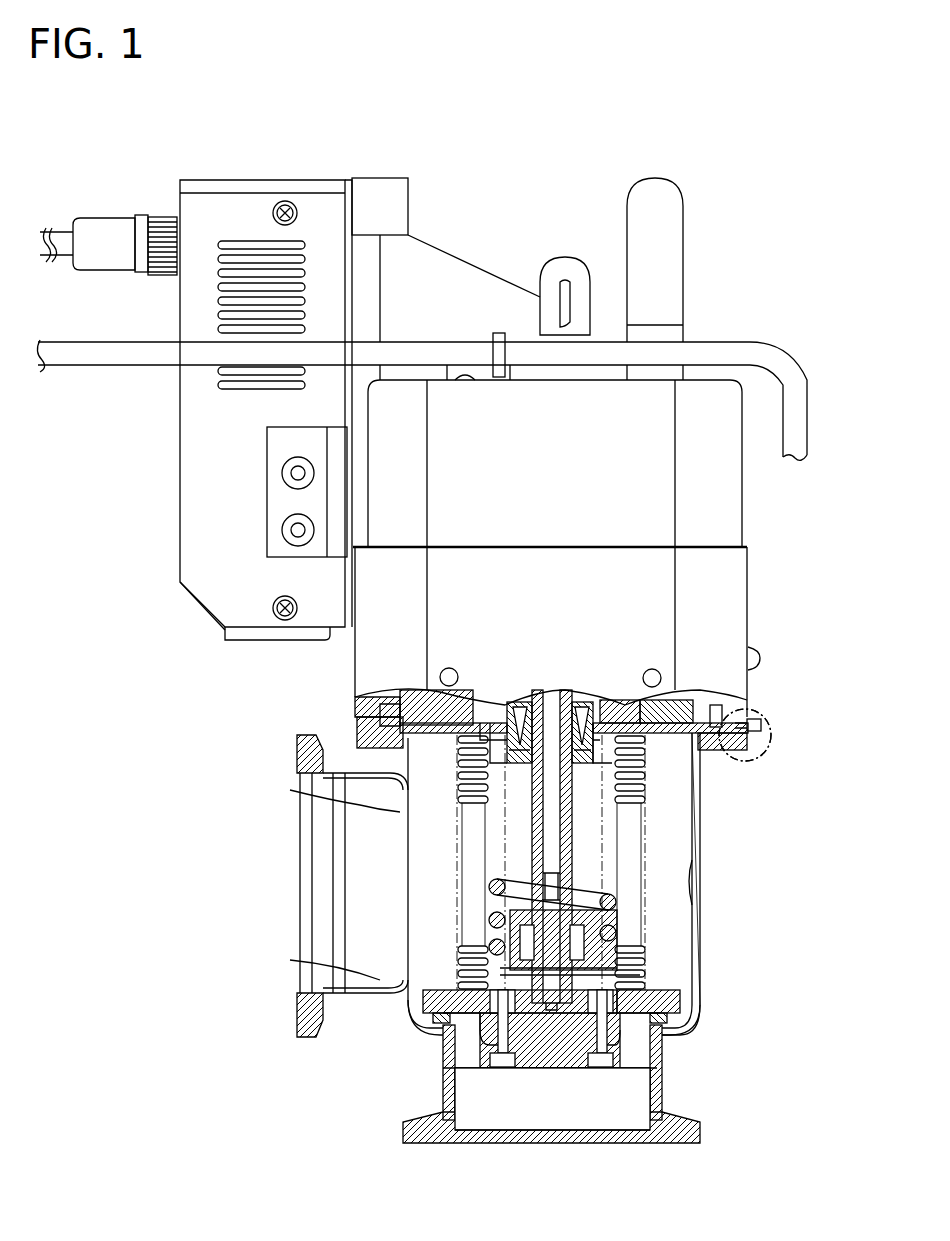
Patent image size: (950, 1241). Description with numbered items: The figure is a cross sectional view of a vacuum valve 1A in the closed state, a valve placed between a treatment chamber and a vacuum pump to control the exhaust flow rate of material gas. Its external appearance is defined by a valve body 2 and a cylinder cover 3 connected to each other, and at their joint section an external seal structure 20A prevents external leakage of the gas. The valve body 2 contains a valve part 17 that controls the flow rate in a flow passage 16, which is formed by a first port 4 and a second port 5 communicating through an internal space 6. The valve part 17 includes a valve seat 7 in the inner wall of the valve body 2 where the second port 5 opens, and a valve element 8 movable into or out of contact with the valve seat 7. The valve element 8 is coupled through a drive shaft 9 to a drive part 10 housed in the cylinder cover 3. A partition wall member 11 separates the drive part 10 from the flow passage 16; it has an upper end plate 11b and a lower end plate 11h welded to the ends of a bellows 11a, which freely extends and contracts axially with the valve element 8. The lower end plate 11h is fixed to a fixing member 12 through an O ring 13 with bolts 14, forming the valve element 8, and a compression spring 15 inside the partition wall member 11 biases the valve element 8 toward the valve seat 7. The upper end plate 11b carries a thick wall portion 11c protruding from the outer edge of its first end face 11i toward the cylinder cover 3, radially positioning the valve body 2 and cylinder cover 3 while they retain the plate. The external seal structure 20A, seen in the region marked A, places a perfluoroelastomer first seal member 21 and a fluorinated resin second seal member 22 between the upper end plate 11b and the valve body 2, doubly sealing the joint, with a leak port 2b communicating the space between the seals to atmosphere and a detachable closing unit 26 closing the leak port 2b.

The vacuum valve 1A is at (753, 157).
The cylinder cover 3 is at (747, 555).
The drive part 10 is at (496, 712).
The first end face 11i is at (690, 722).
The thick wall portion 11c is at (703, 717).
The second seal member 22 is at (745, 712).
The external seal structure 20A is at (755, 718).
The closing unit 26 is at (757, 727).
The leak port 2b is at (750, 745).
The first seal member 21 is at (762, 755).
The detail region A is at (752, 762).
The valve body 2 is at (700, 990).
The first port 4 is at (370, 863).
The flow passage 16 is at (428, 818).
The internal space 6 is at (430, 925).
The valve part 17 is at (420, 986).
The partition wall member 11 is at (657, 950).
The upper end plate 11b is at (668, 745).
The bellows 11a is at (572, 893).
The drive shaft 9 is at (560, 865).
The compression spring 15 is at (616, 935).
The lower end plate 11h is at (670, 1013).
The O ring 13 is at (665, 1028).
The fixing member 12 is at (665, 1045).
The bolts 14 is at (655, 1065).
The valve element 8 is at (772, 1030).
The valve seat 7 is at (432, 1030).
The second port 5 is at (548, 1140).